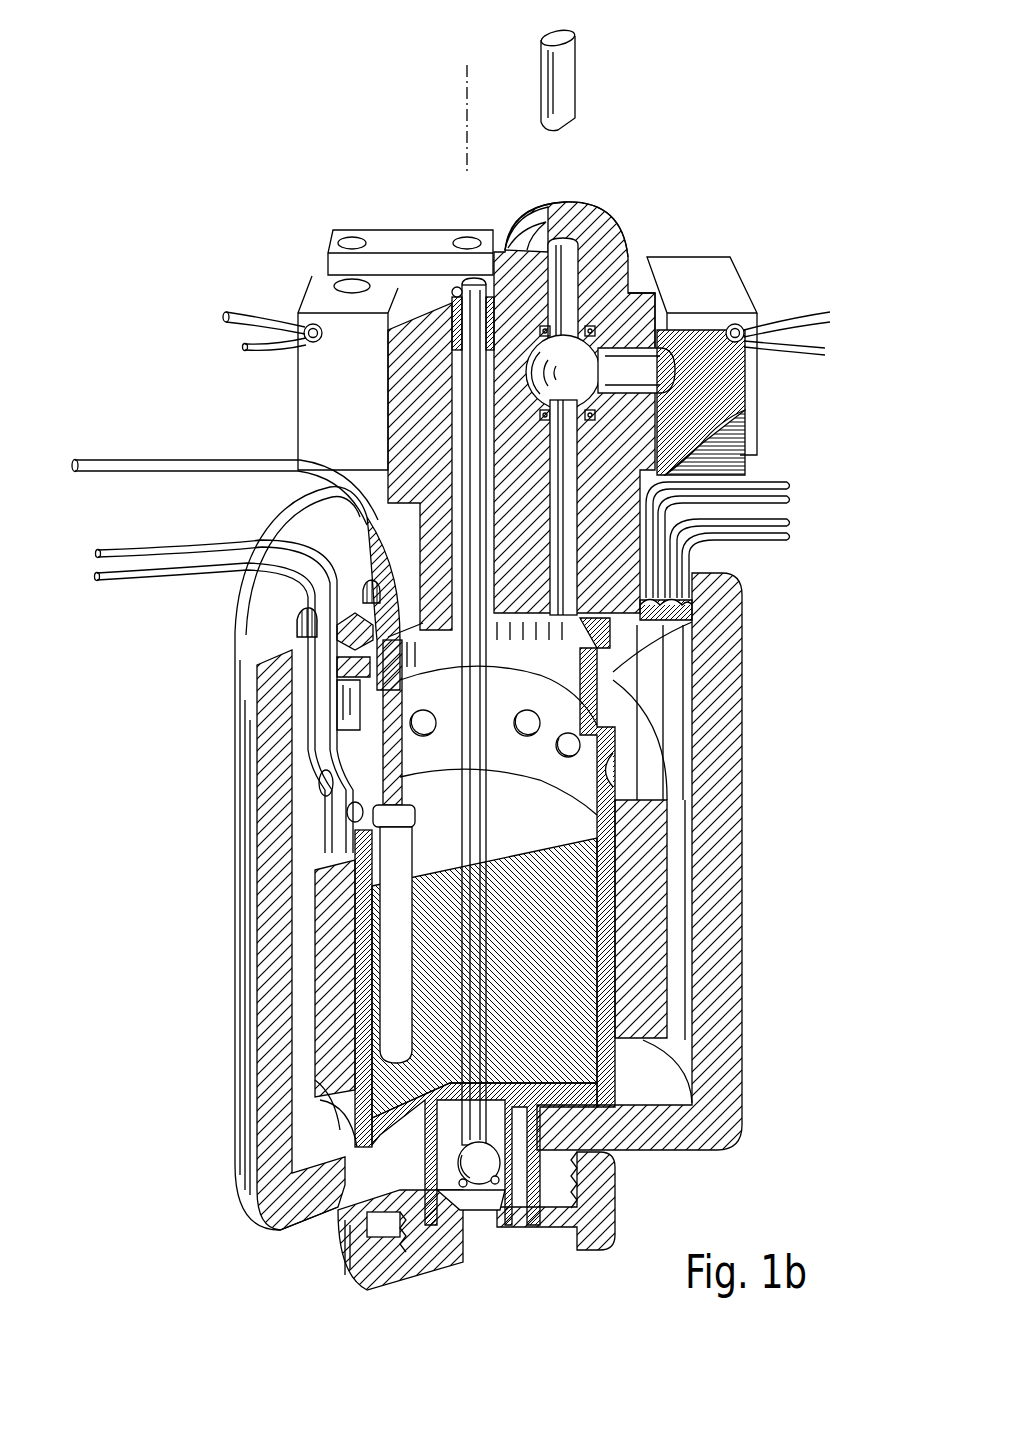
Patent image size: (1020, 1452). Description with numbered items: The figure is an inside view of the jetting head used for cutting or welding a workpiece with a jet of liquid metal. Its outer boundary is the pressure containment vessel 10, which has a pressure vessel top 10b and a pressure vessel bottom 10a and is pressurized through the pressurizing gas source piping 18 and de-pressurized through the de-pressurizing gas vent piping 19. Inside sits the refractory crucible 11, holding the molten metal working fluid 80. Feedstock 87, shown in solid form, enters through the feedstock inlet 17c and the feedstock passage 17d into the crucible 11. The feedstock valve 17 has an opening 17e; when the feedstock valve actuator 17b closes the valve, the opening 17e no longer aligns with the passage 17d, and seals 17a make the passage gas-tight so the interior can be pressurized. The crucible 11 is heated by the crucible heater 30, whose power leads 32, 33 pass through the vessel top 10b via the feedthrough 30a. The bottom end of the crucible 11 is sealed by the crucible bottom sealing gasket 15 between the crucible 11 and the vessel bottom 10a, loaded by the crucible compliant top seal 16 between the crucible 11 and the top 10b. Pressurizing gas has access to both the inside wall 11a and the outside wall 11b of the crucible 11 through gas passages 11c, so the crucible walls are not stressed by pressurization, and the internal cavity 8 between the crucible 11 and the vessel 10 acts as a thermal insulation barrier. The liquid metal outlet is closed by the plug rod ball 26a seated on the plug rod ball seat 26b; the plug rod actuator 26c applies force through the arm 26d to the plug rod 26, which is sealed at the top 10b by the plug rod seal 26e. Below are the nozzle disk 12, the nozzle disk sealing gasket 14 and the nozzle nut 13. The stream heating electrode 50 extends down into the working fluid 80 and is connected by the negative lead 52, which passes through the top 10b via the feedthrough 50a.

The internal cavity 8 is at (318, 1142).
The pressure containment vessel 10 is at (512, 858).
The pressure vessel bottom 10a is at (650, 1104).
The pressure vessel top 10b is at (597, 623).
The crucible 11 is at (485, 923).
The inside wall 11a is at (597, 854).
The outside wall 11b is at (600, 1010).
The gas passages 11c is at (597, 766).
The nozzle disk 12 is at (500, 1217).
The nozzle nut 13 is at (498, 1230).
The nozzle disk sealing gasket 14 is at (477, 1229).
The crucible bottom sealing gasket 15 is at (600, 1112).
The crucible compliant top seal 16 is at (615, 640).
The feedstock valve 17 is at (550, 409).
The seals 17a is at (586, 416).
The feedstock valve actuator 17b is at (738, 289).
The feedstock inlet 17c is at (584, 216).
The feedstock passage 17d is at (552, 504).
The opening 17e is at (642, 298).
The pressurizing gas source piping 18 is at (789, 533).
The de-pressurizing gas vent piping 19 is at (789, 496).
The plug rod 26 is at (478, 667).
The plug rod ball 26a is at (462, 1187).
The plug rod ball seat 26b is at (496, 1185).
The plug rod actuator 26c is at (310, 372).
The arm 26d is at (392, 231).
The plug rod seal 26e is at (455, 290).
The crucible heater 30 is at (461, 860).
The feedthrough 30a is at (296, 634).
The lead 32 is at (148, 580).
The lead 33 is at (150, 548).
The stream heating electrode 50 is at (386, 790).
The feedthrough 50a is at (363, 592).
The negative lead 52 is at (165, 459).
The molten metal working fluid 80 is at (543, 966).
The feedstock 87 is at (576, 76).